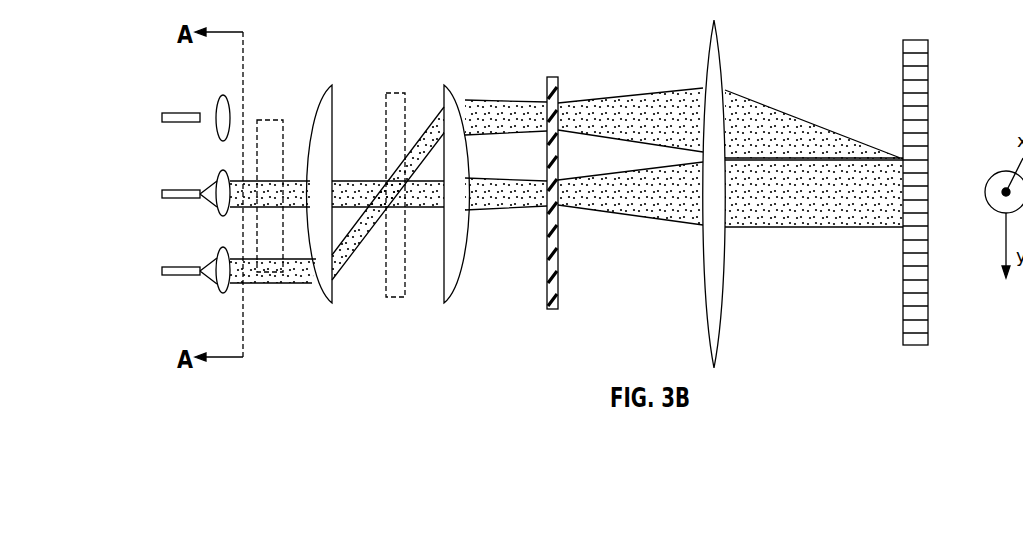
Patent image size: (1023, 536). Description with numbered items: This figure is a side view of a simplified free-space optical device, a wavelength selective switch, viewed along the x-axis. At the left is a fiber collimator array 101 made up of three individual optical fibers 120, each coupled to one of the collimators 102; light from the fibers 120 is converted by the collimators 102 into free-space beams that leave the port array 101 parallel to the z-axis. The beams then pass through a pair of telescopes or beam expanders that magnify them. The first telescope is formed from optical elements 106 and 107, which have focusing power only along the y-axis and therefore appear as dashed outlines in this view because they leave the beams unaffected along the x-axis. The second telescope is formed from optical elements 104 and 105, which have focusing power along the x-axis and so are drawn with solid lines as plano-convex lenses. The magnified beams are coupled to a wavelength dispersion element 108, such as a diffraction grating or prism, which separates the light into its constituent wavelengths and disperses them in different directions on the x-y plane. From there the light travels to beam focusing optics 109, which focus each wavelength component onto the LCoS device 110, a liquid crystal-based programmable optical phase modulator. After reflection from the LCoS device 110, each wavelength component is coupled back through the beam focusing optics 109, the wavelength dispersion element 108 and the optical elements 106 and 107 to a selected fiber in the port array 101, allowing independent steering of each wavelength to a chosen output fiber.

The fiber collimator array 101 is at (232, 296).
The collimators 102 is at (193, 179).
The optical element 104 is at (330, 85).
The optical element 105 is at (446, 85).
The optical element 106 is at (268, 119).
The optical element 107 is at (397, 92).
The wavelength dispersion element 108 is at (549, 77).
The beam focusing optics 109 is at (704, 53).
The LCoS device 110 is at (915, 40).
The optical fibers 120 is at (149, 186).